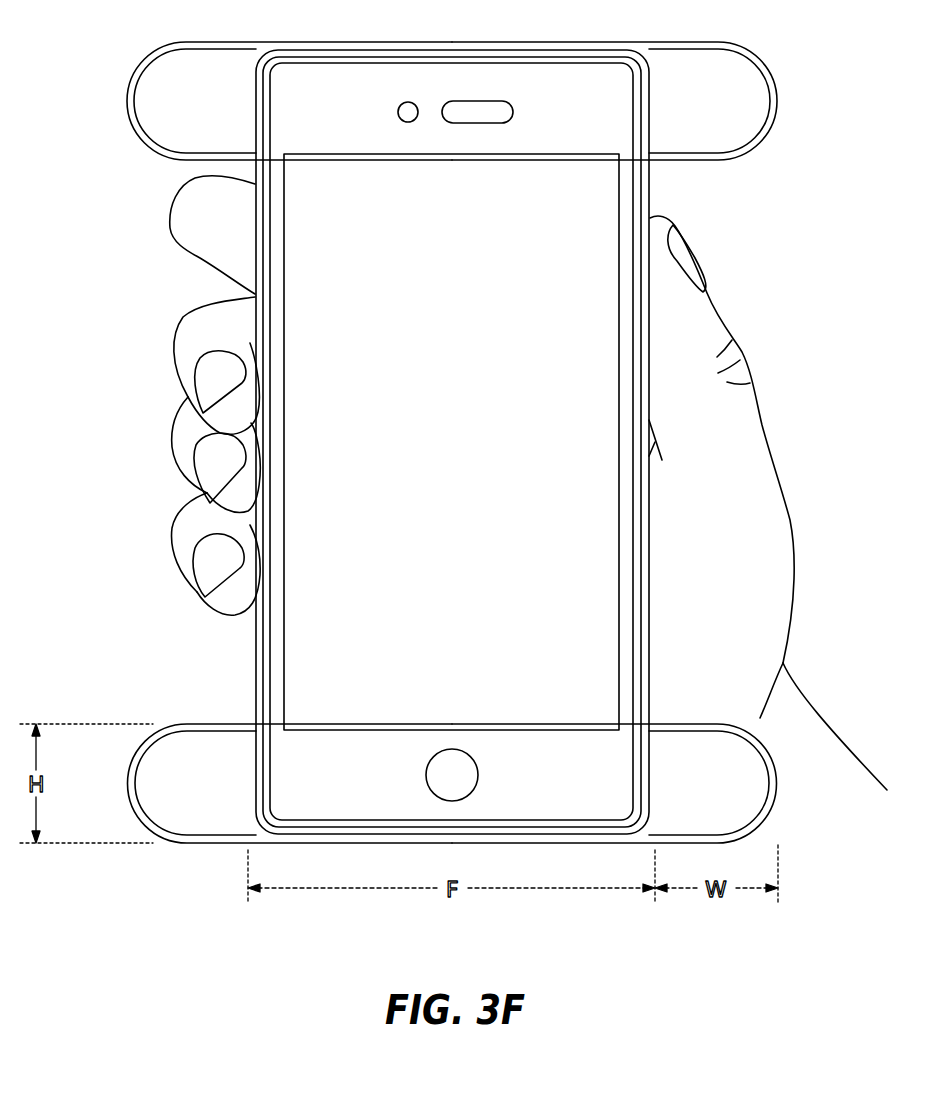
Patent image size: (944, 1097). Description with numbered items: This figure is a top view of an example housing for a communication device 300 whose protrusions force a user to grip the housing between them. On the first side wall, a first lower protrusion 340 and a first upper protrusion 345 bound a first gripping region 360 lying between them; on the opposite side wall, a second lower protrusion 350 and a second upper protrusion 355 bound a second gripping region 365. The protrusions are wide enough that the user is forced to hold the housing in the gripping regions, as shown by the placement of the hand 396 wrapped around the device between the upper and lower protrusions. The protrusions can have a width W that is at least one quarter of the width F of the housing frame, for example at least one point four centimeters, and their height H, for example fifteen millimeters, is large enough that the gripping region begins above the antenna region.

The communication device 300 is at (450, 42).
The first lower protrusion 340 is at (128, 779).
The first upper protrusion 345 is at (127, 97).
The second lower protrusion 350 is at (778, 786).
The second upper protrusion 355 is at (778, 97).
The first gripping region 360 is at (256, 672).
The second gripping region 365 is at (650, 570).
The hand 396 is at (763, 428).